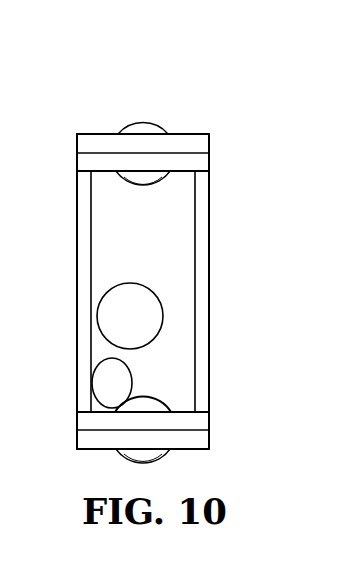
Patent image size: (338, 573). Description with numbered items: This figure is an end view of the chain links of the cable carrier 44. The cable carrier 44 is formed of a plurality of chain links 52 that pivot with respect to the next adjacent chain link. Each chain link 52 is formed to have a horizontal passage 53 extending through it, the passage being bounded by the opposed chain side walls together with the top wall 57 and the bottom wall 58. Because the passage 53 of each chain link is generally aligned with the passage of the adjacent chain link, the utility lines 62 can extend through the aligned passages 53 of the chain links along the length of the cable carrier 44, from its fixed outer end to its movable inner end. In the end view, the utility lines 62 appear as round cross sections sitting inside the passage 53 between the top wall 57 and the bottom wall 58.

The cable carrier 44 is at (92, 98).
The chain links 52 is at (188, 131).
The horizontal passages 53 is at (162, 246).
The top wall 57 is at (209, 145).
The bottom wall 58 is at (209, 420).
The utility lines 62 is at (133, 377).